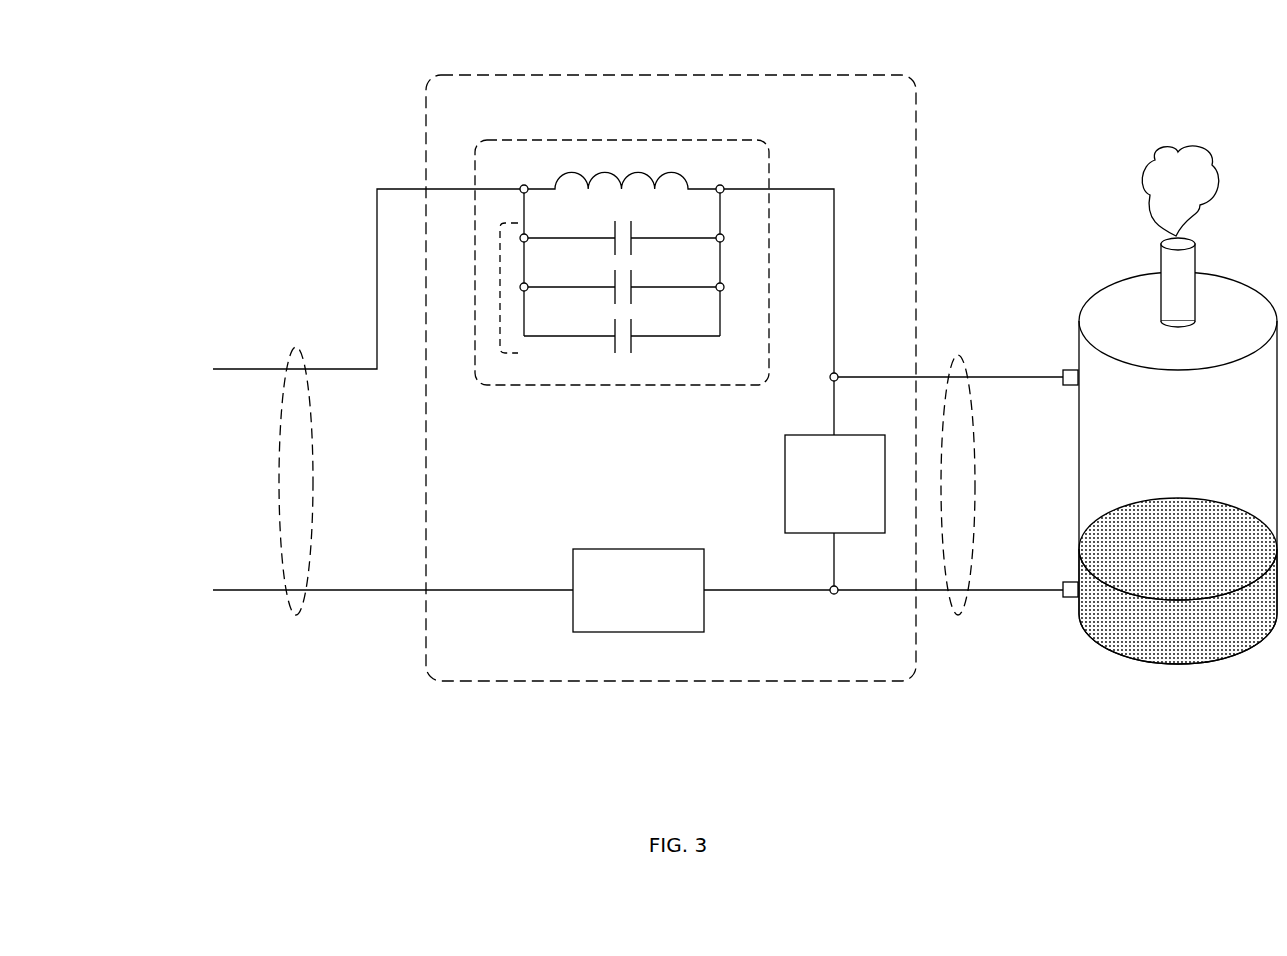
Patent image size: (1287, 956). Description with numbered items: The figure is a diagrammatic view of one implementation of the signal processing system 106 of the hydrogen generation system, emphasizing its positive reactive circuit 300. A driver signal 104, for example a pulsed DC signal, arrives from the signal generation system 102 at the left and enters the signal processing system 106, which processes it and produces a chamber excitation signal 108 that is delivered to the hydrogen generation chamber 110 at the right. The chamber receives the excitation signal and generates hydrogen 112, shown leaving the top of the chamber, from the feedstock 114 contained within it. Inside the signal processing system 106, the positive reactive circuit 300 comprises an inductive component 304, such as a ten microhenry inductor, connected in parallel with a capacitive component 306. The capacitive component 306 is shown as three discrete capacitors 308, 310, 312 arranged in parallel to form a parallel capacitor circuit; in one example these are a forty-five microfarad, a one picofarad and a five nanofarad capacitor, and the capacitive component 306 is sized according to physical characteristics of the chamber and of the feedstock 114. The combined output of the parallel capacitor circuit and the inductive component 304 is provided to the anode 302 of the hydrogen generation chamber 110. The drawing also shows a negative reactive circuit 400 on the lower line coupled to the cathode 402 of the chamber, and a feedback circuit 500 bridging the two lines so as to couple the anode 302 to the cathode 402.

The signal generation system 102 is at (199, 476).
The driver signal 104 is at (300, 348).
The signal processing system 106 is at (916, 107).
The chamber excitation signal 108 is at (959, 355).
The hydrogen generation chamber 110 is at (1178, 468).
The hydrogen 112 is at (1180, 191).
The feedstock 114 is at (1178, 581).
The positive reactive circuit 300 is at (769, 168).
The anode 302 is at (1063, 372).
The inductive component 304 is at (690, 189).
The capacitive component 306 is at (577, 271).
The capacitor 308 is at (632, 238).
The capacitor 310 is at (632, 287).
The capacitor 312 is at (632, 336).
The negative reactive circuit 400 is at (638, 590).
The cathode 402 is at (1063, 596).
The feedback circuit 500 is at (835, 484).